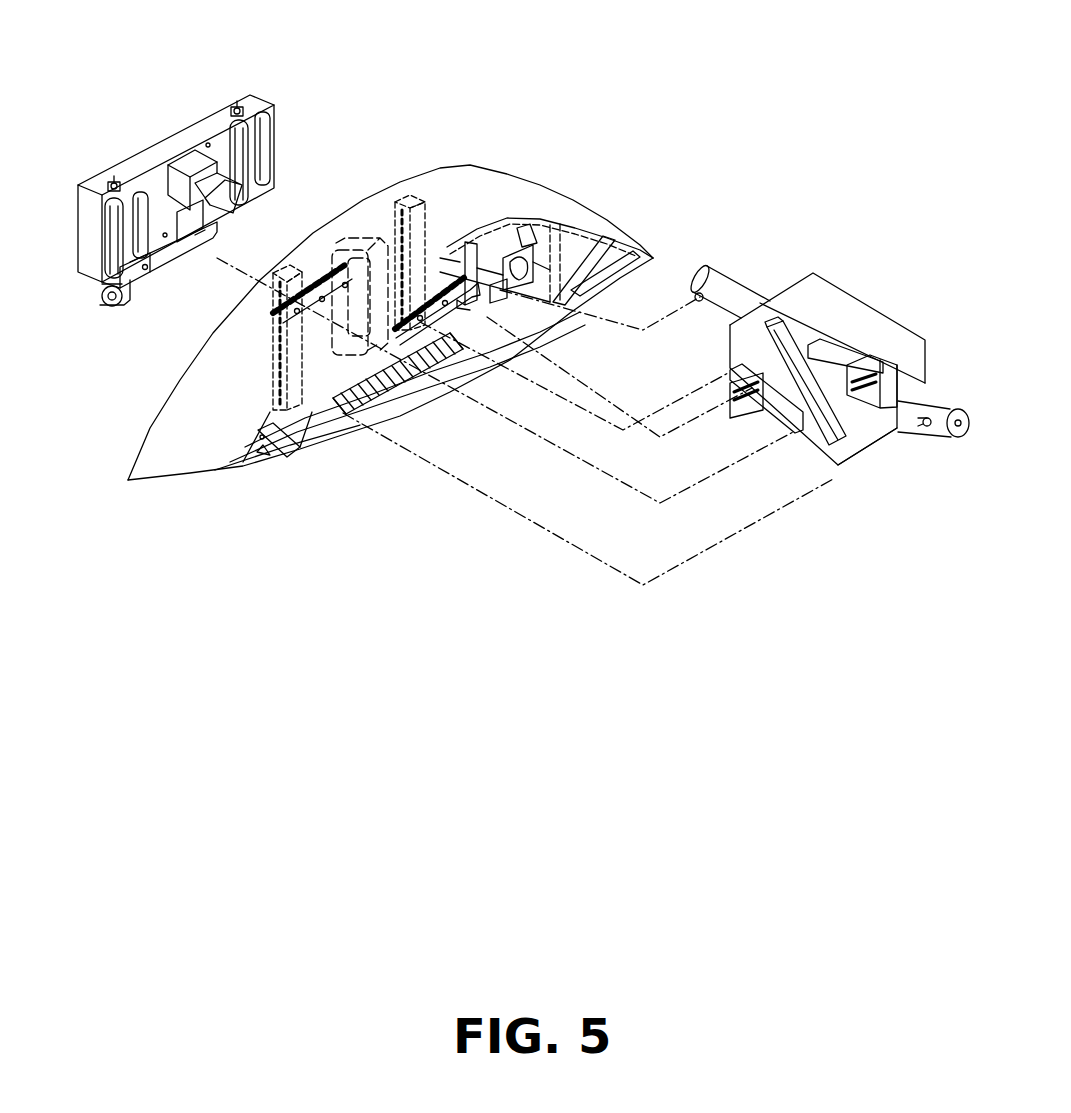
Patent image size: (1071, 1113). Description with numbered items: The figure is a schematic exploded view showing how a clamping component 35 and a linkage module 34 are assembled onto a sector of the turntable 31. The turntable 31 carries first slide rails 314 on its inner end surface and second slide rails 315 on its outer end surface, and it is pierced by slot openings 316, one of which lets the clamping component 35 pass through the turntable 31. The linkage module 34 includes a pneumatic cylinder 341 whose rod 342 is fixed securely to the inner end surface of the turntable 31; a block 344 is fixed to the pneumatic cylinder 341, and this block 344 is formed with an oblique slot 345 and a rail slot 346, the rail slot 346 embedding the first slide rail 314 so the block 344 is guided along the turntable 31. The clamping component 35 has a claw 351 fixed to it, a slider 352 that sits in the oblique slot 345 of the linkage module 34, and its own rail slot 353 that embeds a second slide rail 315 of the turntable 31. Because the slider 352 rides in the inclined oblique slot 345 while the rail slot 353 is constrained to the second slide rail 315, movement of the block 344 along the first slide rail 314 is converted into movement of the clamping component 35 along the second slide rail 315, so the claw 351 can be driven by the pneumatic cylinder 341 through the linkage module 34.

The turntable 31 is at (545, 197).
The first slide rail 314 is at (448, 295).
The second slide rail 315 is at (400, 198).
The slot opening 316 is at (350, 240).
The linkage module 34 is at (828, 408).
The pneumatic cylinder 341 is at (835, 303).
The rod 342 is at (748, 297).
The block 344 is at (847, 447).
The oblique slot 345 is at (815, 405).
The rail slot 346 is at (758, 425).
The clamping component 35 is at (165, 192).
The claw 351 is at (148, 295).
The slider 352 is at (212, 195).
The rail slot 353 is at (115, 183).